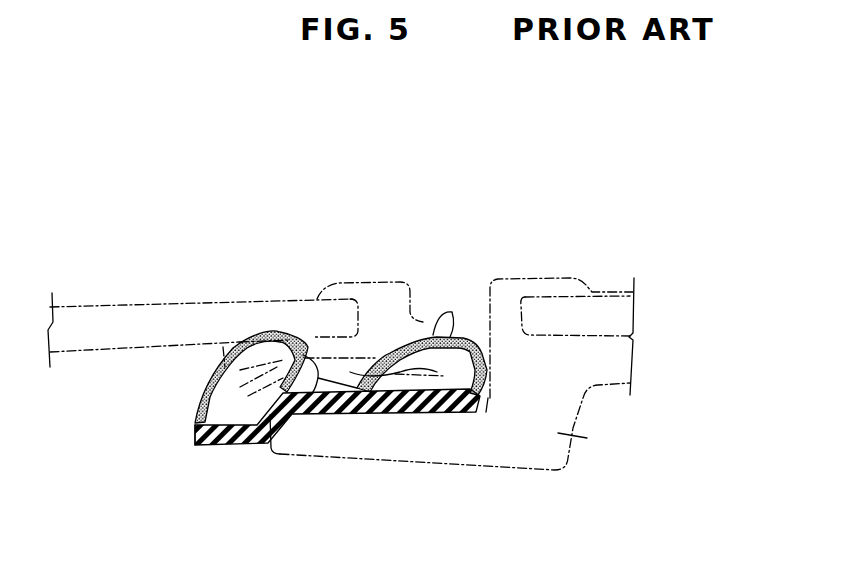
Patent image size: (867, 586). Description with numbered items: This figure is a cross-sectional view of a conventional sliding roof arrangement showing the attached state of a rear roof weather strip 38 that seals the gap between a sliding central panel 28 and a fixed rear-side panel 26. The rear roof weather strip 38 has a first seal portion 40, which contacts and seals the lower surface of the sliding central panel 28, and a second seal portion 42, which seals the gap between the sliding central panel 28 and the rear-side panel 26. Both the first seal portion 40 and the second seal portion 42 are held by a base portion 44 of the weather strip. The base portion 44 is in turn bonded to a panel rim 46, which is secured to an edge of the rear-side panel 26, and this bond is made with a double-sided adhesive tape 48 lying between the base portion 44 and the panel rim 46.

The rear-side panel 26 is at (606, 292).
The central panel 28 is at (140, 304).
The rear roof weather strip 38 is at (186, 438).
The first seal portion 40 is at (277, 332).
The second seal portion 42 is at (430, 338).
The base portion 44 is at (318, 414).
The panel rim 46 is at (604, 440).
The double-sided adhesive tape 48 is at (427, 408).